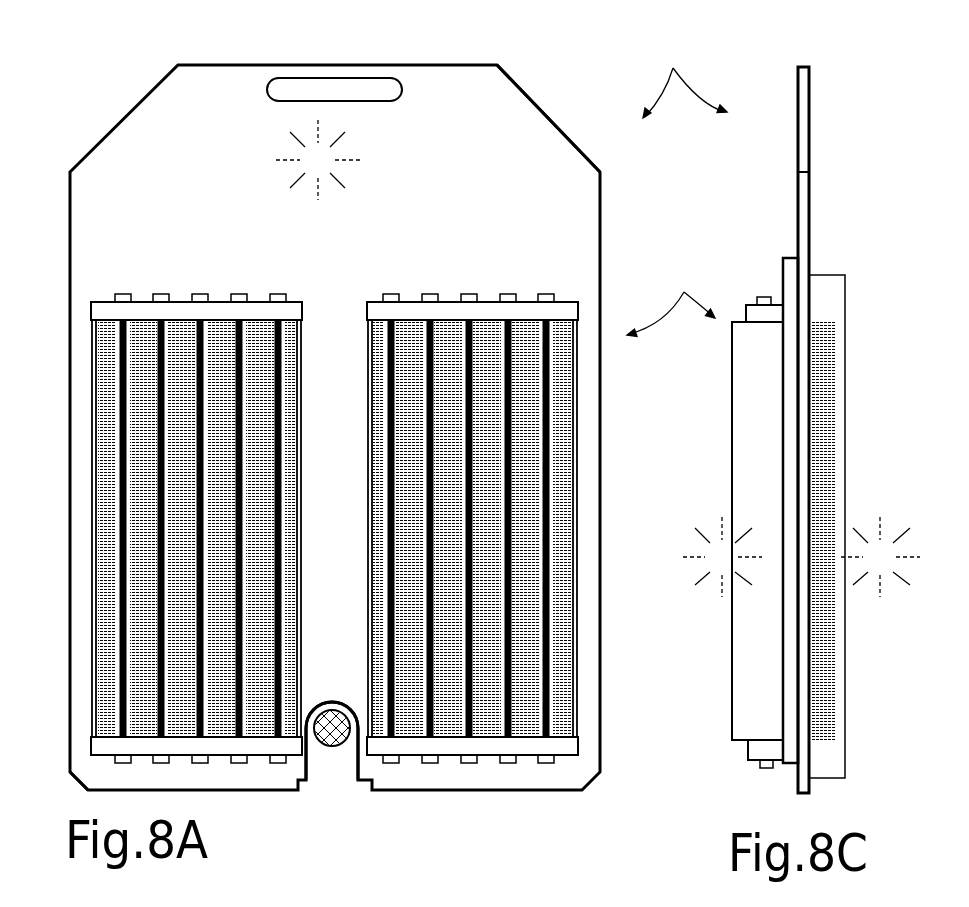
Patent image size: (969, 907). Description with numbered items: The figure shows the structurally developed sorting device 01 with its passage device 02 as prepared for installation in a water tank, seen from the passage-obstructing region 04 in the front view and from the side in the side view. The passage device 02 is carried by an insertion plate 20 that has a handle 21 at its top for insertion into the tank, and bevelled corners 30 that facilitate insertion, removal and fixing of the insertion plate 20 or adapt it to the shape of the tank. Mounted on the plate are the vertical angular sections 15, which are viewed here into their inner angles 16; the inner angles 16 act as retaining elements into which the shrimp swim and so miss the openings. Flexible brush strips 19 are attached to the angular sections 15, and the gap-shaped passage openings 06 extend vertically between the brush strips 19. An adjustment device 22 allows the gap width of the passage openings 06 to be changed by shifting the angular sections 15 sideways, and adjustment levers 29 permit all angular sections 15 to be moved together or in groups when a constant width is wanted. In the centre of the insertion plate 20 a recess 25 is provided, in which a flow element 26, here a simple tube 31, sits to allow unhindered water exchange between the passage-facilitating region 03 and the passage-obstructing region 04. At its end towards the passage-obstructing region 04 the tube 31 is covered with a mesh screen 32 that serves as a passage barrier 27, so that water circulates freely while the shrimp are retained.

In FIG. 8A, the insertion plate 20 is at (143, 143).
In FIG. 8C, the insertion plate 20 is at (808, 122).
In FIG. 8A, the handle 21 is at (305, 90).
In FIG. 8A, the bevelled corners 30 is at (566, 137).
In FIG. 8A, the passage-obstructing region 04 is at (318, 160).
In FIG. 8C, the passage-obstructing region 04 is at (880, 557).
In FIG. 8A, the adjustment device 22 is at (100, 312).
In FIG. 8C, the adjustment device 22 is at (768, 318).
In FIG. 8A, the angular sections 15 is at (162, 495).
In FIG. 8C, the angular sections 15 is at (731, 497).
In FIG. 8A, the inner angle 16 is at (205, 345).
In FIG. 8A, the flexible brush strips 19 is at (472, 541).
In FIG. 8C, the flexible brush strips 19 is at (818, 418).
In FIG. 8A, the recess 25 is at (305, 766).
In FIG. 8A, the flow element 26 is at (341, 790).
In FIG. 8A, the tube 31 is at (335, 748).
In FIG. 8A, the passage barrier 27 is at (372, 765).
In FIG. 8A, the mesh screen 32 is at (338, 748).
In FIG. 8A, the passage openings 06 is at (523, 728).
In FIG. 8C, the sorting device 01 is at (685, 79).
In FIG. 8C, the passage device 02 is at (671, 301).
In FIG. 8C, the passage-facilitating region 03 is at (722, 557).
In FIG. 8C, the adjustment levers 29 is at (818, 763).